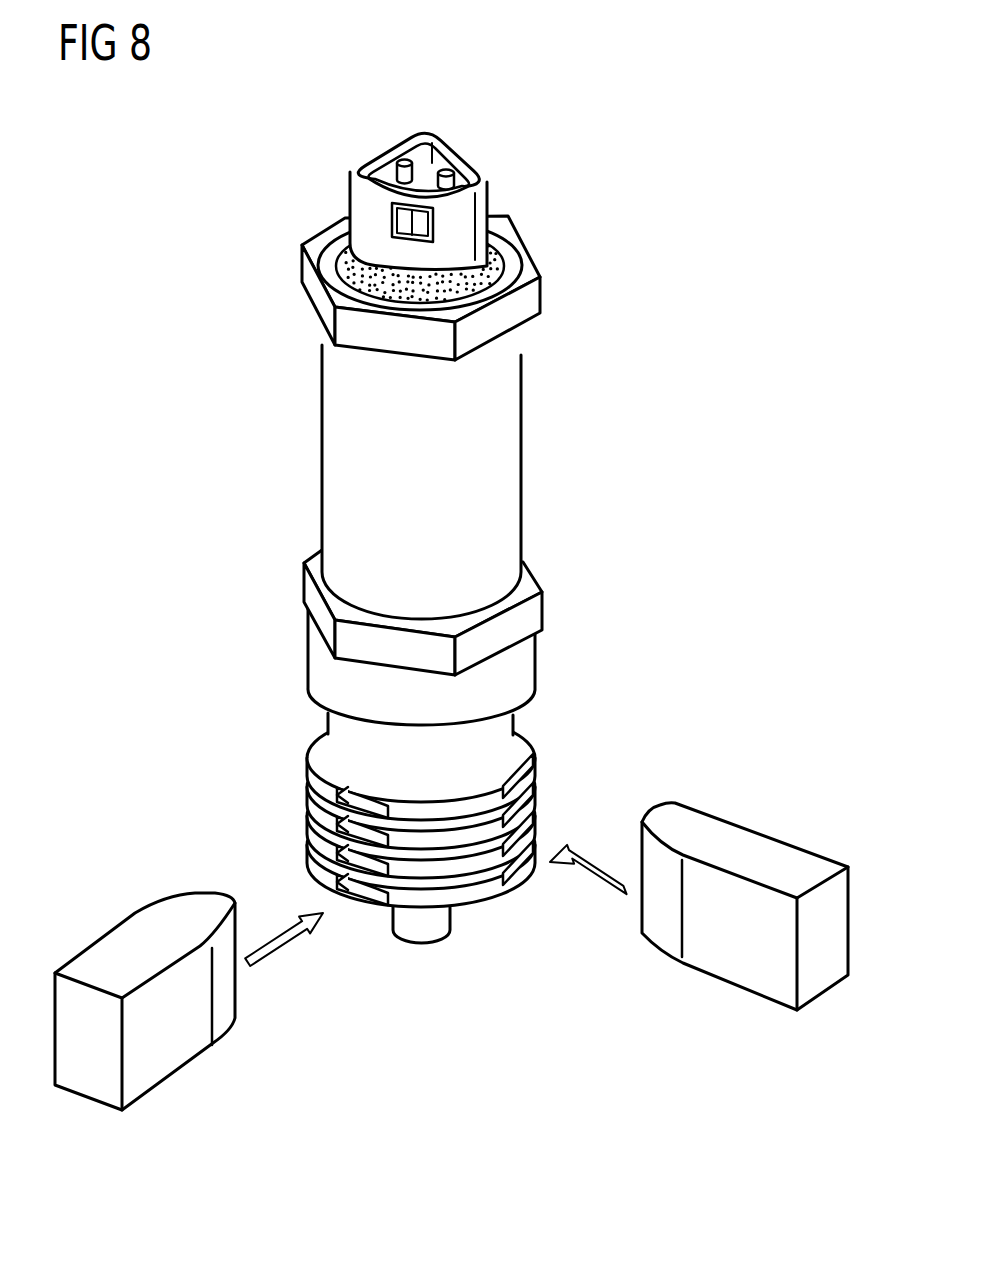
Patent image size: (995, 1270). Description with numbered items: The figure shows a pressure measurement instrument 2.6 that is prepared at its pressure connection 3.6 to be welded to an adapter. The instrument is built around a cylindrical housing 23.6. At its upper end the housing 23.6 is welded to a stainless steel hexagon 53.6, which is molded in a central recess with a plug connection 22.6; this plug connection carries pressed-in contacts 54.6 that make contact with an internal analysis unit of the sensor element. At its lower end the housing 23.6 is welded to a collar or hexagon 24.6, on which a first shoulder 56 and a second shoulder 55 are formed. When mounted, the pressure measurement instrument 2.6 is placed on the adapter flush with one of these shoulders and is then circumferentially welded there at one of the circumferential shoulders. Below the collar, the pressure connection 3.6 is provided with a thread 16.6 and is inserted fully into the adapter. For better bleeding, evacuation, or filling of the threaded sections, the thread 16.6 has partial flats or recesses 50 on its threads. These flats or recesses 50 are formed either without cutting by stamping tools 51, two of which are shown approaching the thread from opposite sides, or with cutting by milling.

The pressure measurement instrument 2.6 is at (300, 362).
The pressure connection 3.6 is at (557, 762).
The thread 16.6 is at (315, 763).
The plug connection 22.6 is at (358, 199).
The housing 23.6 is at (514, 405).
The collar or hexagon 24.6 is at (310, 588).
The partial flats or recesses 50 is at (333, 833).
The stamping tools 51 is at (172, 1053).
The stainless steel hexagon 53.6 is at (513, 260).
The pressed-in contacts 54.6 is at (446, 168).
The second shoulder 55 is at (520, 710).
The first shoulder 56 is at (538, 653).